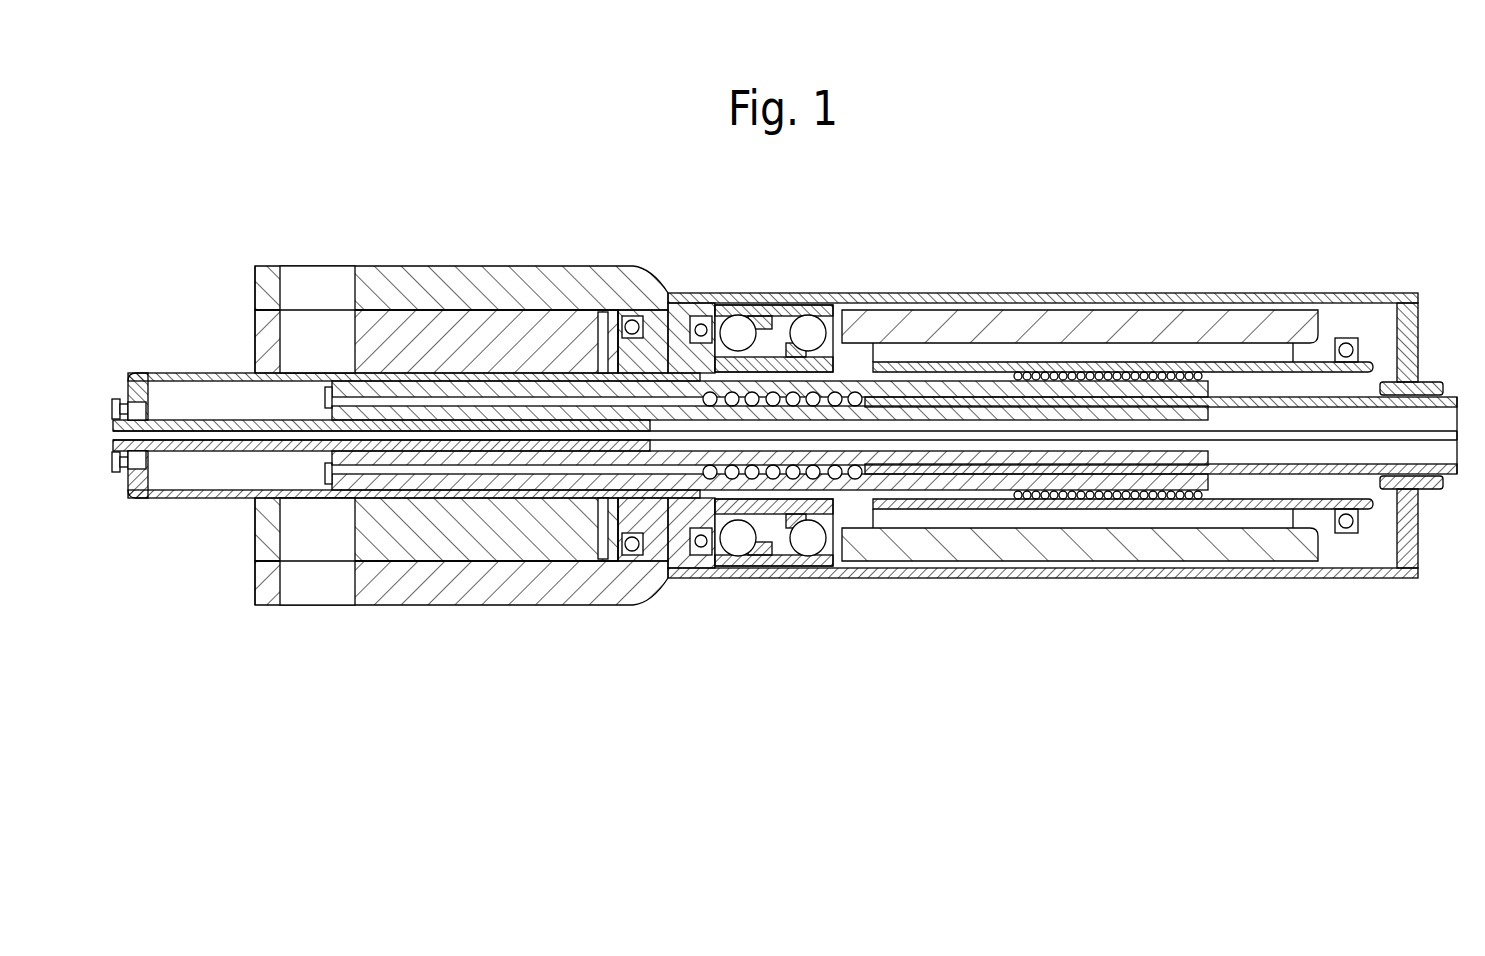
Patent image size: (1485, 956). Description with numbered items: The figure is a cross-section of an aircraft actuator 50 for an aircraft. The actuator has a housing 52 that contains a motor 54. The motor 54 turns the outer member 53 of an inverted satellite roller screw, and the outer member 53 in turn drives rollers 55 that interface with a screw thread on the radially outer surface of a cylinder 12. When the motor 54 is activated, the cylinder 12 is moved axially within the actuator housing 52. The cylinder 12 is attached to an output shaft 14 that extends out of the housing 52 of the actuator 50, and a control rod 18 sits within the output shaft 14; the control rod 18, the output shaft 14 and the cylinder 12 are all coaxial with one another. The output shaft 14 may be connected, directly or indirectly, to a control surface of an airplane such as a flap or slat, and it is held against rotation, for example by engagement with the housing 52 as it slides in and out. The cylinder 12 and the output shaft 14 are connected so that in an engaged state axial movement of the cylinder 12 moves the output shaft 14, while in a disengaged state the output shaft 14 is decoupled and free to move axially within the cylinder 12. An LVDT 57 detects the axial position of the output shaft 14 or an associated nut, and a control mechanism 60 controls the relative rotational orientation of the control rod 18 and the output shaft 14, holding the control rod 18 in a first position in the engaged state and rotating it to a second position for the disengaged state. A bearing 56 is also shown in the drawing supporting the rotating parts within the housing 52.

The cylinder 12 is at (1000, 392).
The output shaft 14 is at (1317, 477).
The control rod 18 is at (1000, 458).
The aircraft actuator 50 is at (784, 392).
The housing 52 is at (1130, 574).
The outer member 53 is at (1263, 362).
The motor 54 is at (930, 320).
The rollers 55 is at (1142, 372).
The ball bearing 56 is at (808, 558).
The LVDT 57 is at (178, 455).
The control mechanism 60 is at (700, 318).